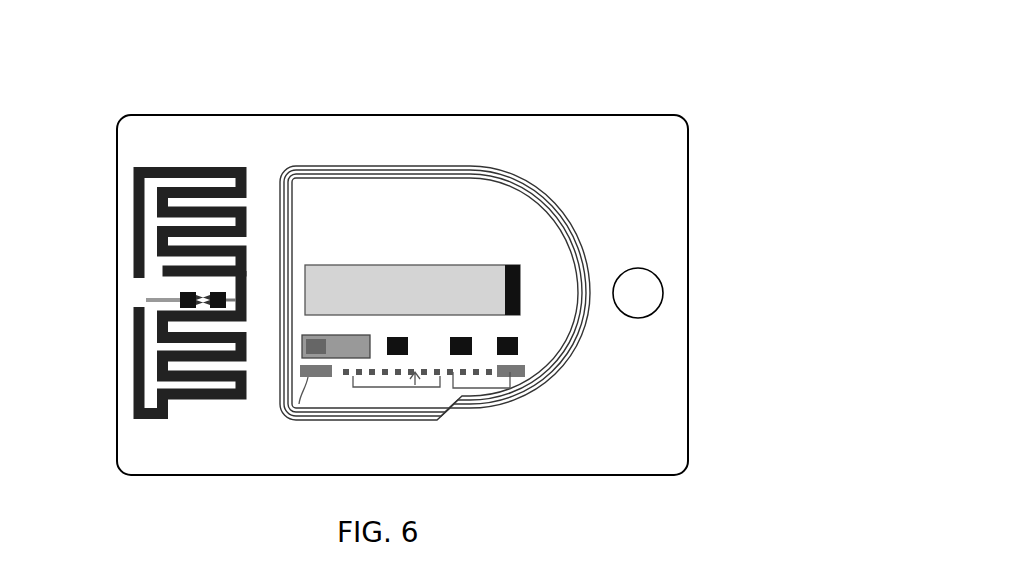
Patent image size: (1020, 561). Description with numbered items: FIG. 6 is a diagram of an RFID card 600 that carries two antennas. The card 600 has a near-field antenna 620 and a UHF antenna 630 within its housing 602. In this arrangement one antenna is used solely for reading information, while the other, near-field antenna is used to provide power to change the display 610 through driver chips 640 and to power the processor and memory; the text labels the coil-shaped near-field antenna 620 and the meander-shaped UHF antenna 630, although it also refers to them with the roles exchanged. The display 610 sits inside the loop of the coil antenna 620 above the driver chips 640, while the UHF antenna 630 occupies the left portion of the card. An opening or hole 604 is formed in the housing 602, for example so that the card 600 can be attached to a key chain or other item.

The card 600 is at (86, 68).
The housing 602 is at (495, 148).
The opening or hole 604 is at (638, 282).
The display 610 is at (520, 293).
The near-field antenna 620 is at (585, 233).
The UHF antenna 630 is at (210, 155).
The driver chips 640 is at (523, 348).